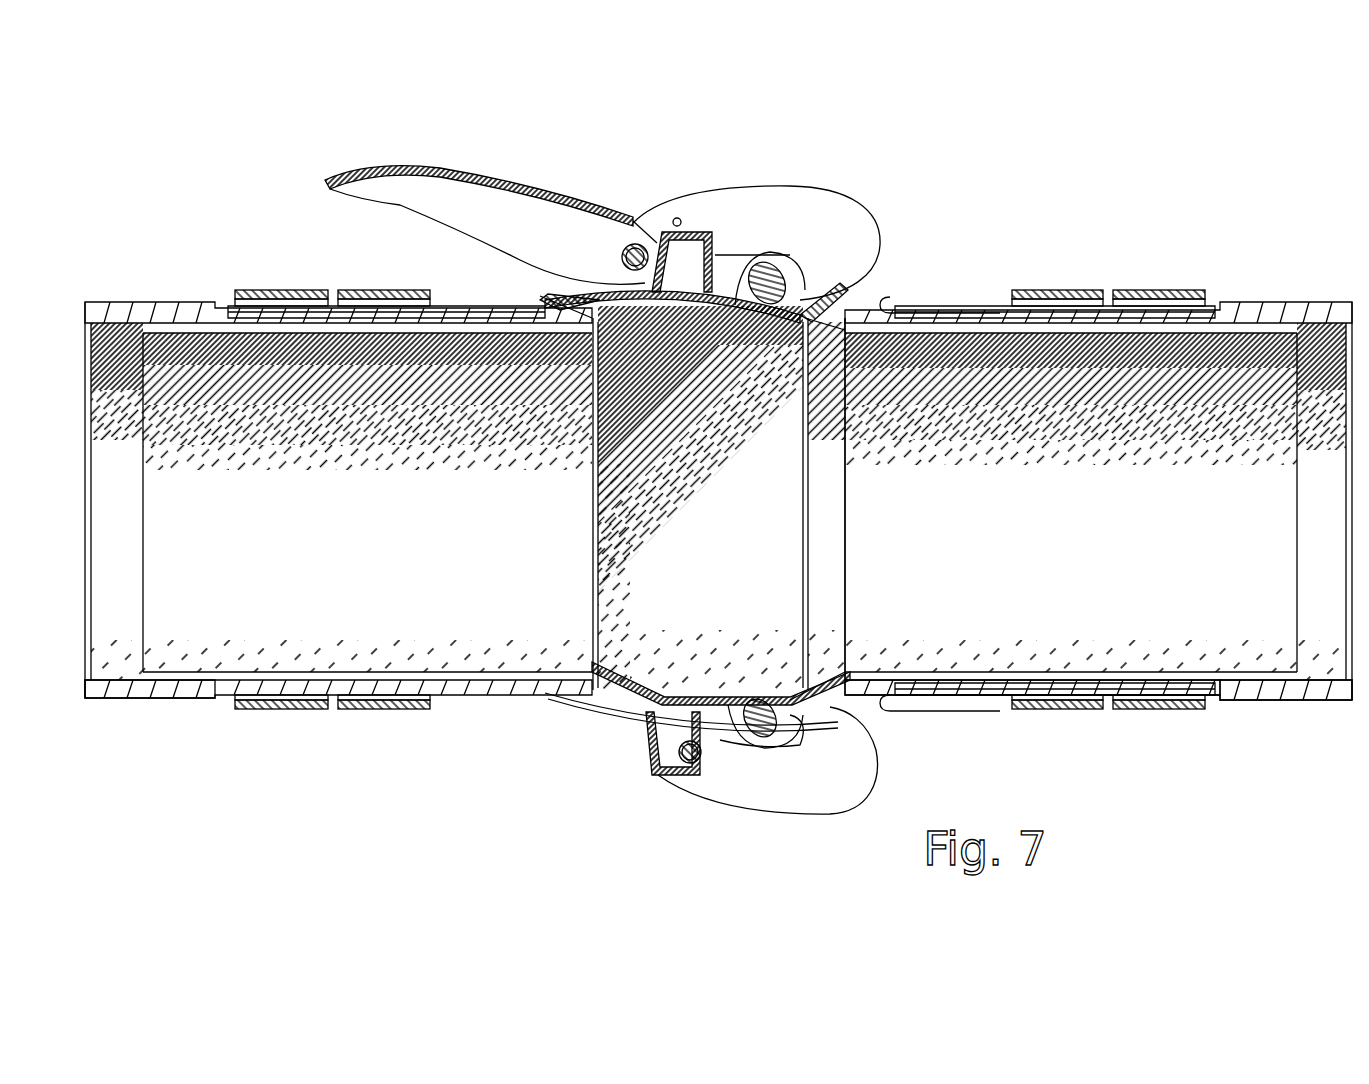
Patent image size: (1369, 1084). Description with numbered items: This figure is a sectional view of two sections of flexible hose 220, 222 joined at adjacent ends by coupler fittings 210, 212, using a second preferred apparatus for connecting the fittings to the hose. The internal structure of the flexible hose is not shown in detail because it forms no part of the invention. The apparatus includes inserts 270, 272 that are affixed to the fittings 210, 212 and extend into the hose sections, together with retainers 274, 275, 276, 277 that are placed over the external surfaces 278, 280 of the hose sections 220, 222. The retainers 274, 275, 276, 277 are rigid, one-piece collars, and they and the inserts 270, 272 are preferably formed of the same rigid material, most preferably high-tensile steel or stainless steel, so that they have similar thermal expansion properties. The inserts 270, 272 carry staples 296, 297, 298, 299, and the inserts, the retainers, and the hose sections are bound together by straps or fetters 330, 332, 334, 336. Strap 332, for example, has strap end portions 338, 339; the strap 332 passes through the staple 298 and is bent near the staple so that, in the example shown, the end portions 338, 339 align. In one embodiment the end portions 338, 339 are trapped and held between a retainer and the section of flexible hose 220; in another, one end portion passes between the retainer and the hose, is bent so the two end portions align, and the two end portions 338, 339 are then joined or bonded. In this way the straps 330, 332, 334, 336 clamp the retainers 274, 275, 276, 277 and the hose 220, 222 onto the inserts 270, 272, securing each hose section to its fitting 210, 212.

The coupler fitting 210 is at (650, 522).
The coupler fitting 212 is at (825, 512).
The section of flexible hose 220 is at (1294, 312).
The section of flexible hose 222 is at (148, 312).
The insert 270 is at (1130, 690).
The insert 272 is at (275, 676).
The retainer 274 is at (1180, 298).
The retainer 275 is at (1082, 296).
The retainer 276 is at (360, 296).
The retainer 277 is at (262, 296).
The external surface 278 is at (1252, 725).
The external surface 280 is at (150, 720).
The staple 296 is at (915, 300).
The staple 297 is at (540, 300).
The staple 298 is at (915, 680).
The staple 299 is at (530, 705).
The strap 330 is at (975, 302).
The strap 332 is at (990, 685).
The strap 334 is at (470, 300).
The strap 336 is at (440, 697).
The strap end portion 338 is at (1118, 705).
The strap end portion 339 is at (1185, 707).